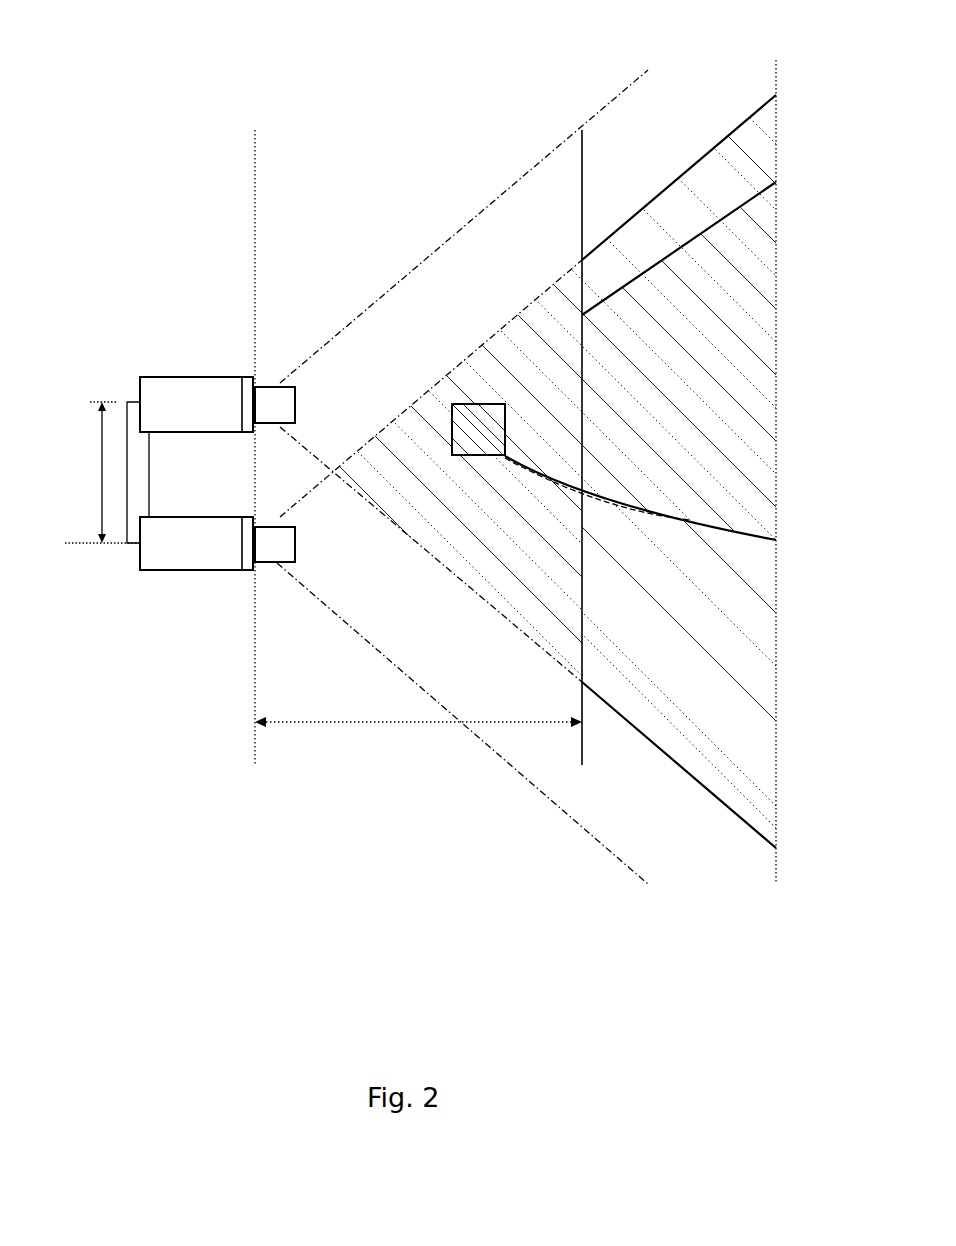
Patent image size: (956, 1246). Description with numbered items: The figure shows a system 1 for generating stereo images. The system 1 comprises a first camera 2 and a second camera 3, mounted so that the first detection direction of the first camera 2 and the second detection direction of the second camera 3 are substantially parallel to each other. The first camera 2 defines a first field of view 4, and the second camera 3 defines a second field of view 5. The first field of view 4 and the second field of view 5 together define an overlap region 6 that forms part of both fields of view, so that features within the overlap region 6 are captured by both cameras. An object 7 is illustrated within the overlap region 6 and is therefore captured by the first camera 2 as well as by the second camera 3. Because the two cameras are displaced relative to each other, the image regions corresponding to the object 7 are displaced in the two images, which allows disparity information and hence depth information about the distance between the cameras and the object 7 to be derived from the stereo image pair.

The system 1 is at (113, 337).
The first camera 2 is at (180, 395).
The second camera 3 is at (178, 550).
The first field of view 4 is at (528, 212).
The second field of view 5 is at (453, 653).
The overlap region 6 is at (673, 647).
The object 7 is at (477, 425).